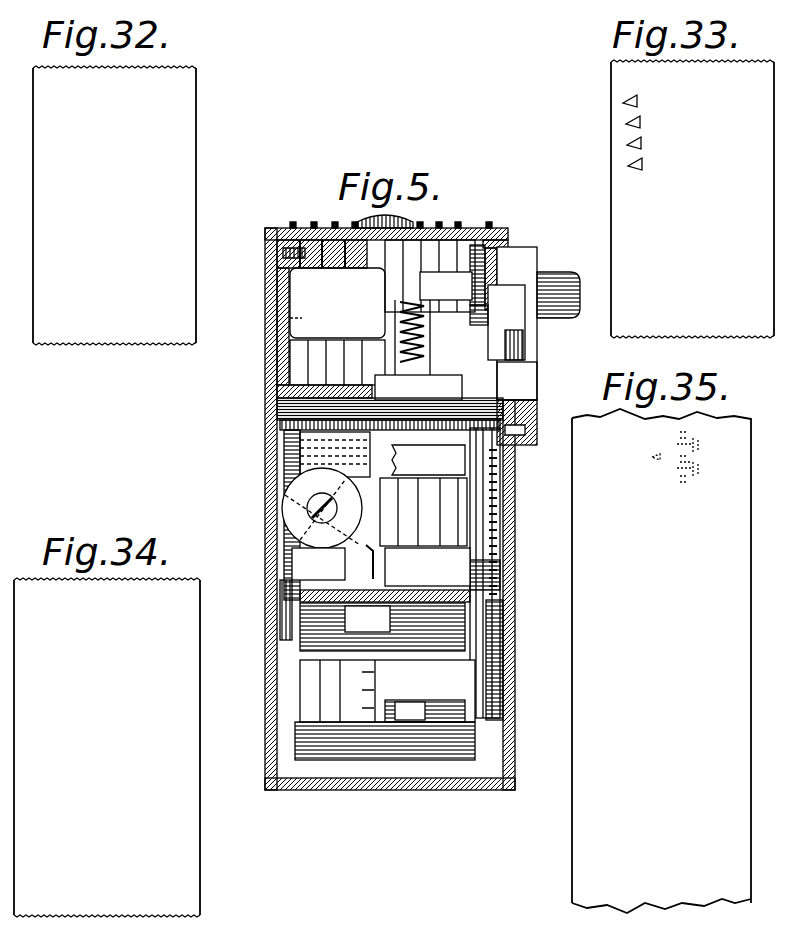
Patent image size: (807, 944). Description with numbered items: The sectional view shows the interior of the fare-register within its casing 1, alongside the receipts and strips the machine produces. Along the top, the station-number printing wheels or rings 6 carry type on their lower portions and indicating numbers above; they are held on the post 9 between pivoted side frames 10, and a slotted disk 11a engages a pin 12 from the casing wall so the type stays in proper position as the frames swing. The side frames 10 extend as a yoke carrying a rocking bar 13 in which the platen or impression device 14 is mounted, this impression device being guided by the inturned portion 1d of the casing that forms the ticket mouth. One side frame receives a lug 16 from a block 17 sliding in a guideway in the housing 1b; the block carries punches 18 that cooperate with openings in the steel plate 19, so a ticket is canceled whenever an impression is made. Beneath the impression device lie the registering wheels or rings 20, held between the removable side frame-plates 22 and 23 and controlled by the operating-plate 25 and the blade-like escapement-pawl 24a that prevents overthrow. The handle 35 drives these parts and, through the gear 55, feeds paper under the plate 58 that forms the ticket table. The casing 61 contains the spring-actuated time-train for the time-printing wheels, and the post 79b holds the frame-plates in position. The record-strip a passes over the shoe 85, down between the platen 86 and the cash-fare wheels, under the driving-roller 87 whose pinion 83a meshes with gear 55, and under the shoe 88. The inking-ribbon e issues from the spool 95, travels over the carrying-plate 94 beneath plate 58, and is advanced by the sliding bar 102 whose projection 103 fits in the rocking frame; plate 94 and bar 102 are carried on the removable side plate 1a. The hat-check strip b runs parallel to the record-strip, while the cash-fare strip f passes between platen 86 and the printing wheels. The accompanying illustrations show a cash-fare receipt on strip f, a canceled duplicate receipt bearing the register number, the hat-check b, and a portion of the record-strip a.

In FIG. 5, the casing 1 is at (269, 229).
In FIG. 5, the removable side plate 1a is at (266, 280).
In FIG. 5, the housing 1b is at (517, 323).
In FIG. 5, the inturned portion of the casing 1d is at (275, 404).
In FIG. 5, the printing wheels 6 is at (420, 227).
In FIG. 33, the post 9 is at (611, 93).
In FIG. 5, the side frames 10 is at (492, 284).
In FIG. 5, the slotted disk 11a is at (473, 240).
In FIG. 5, the pin 12 is at (492, 256).
In FIG. 5, the rocking bar 13 is at (446, 286).
In FIG. 5, the platen or impression device 14 is at (418, 350).
In FIG. 5, the lug 16 is at (482, 318).
In FIG. 5, the block 17 is at (506, 322).
In FIG. 5, the punches 18 is at (520, 352).
In FIG. 5, the steel plate 19 is at (537, 426).
In FIG. 5, the registering wheels 20 is at (446, 512).
In FIG. 5, the removable side frame-plate 22 is at (467, 536).
In FIG. 5, the companion removable side frame-plate 23 is at (297, 584).
In FIG. 5, the escapement-pawl 24a is at (418, 565).
In FIG. 5, the operating-plate 25 is at (478, 522).
In FIG. 5, the operating-handle 35 is at (500, 473).
In FIG. 5, the gear 55 is at (481, 578).
In FIG. 5, the plate 58 is at (273, 414).
In FIG. 5, the time-train casing 61 is at (425, 711).
In FIG. 5, the post 79b is at (387, 691).
In FIG. 5, the pinion 83a is at (486, 618).
In FIG. 5, the shoe 85 is at (428, 460).
In FIG. 5, the platen 86 is at (318, 564).
In FIG. 5, the driving-roller 87 is at (385, 620).
In FIG. 5, the shoe 88 is at (318, 761).
In FIG. 5, the carrying-plate 94 is at (278, 441).
In FIG. 5, the spool 95 is at (322, 508).
In FIG. 5, the sliding bar 102 is at (277, 358).
In FIG. 5, the projection 103 is at (290, 318).
In FIG. 5, the inking-ribbon e is at (283, 466).
In FIG. 32, the paper strip f is at (190, 114).
In FIG. 34, the hat-check strip b is at (200, 803).
In FIG. 35, the record-strip a is at (575, 825).